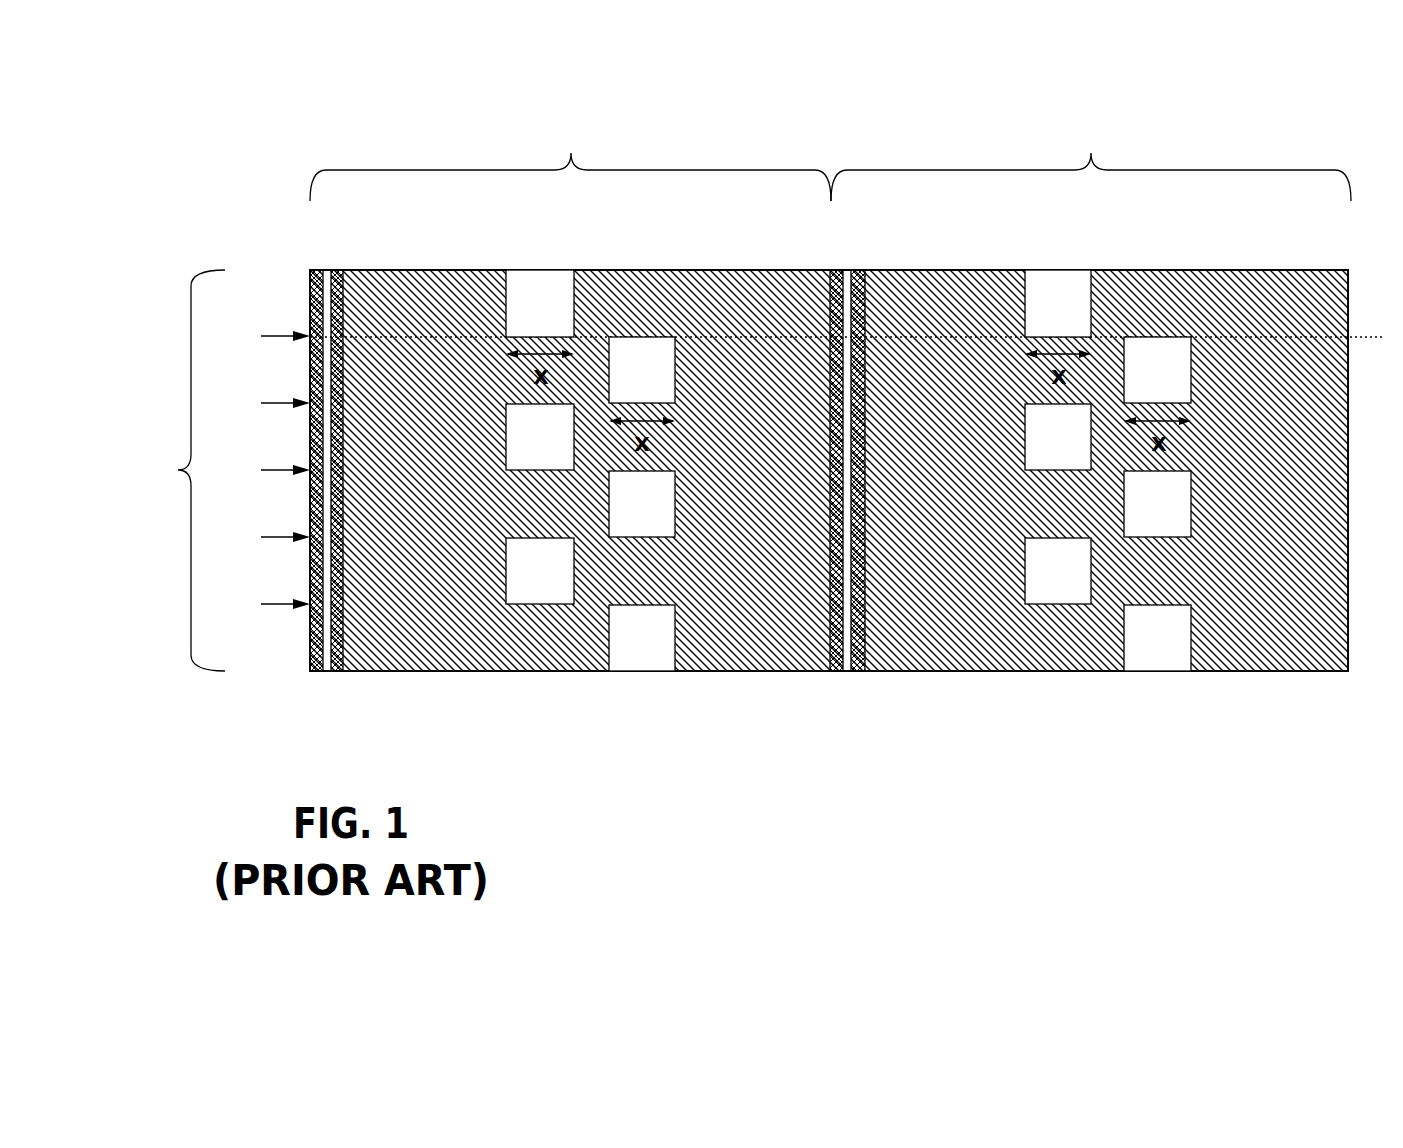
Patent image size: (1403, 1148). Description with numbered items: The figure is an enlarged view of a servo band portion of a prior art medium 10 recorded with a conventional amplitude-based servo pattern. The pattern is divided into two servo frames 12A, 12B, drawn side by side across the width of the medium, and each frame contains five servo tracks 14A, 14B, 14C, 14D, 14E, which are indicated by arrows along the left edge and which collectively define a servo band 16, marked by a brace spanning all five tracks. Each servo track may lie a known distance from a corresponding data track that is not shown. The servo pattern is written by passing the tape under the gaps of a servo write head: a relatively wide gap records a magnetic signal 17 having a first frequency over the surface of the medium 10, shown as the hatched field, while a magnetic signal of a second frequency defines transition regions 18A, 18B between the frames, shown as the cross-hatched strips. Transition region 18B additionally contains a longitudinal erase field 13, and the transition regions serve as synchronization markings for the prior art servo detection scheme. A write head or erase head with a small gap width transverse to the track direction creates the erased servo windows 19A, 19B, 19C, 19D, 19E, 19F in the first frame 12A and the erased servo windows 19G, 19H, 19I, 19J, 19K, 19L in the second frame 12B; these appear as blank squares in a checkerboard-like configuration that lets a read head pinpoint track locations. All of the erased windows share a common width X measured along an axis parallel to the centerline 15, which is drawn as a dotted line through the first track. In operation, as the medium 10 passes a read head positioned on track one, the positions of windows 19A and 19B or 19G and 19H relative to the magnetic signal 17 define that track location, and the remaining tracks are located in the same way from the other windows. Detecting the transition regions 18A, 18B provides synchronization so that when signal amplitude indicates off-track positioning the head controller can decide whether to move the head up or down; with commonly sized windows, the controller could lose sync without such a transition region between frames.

The medium 10 is at (1366, 530).
The servo frame 12A is at (570, 163).
The servo frame 12B is at (1091, 163).
The longitudinal erase field 13 is at (838, 262).
The servo track 14A is at (264, 336).
The servo track 14B is at (264, 403).
The servo track 14C is at (264, 470).
The servo track 14D is at (264, 537).
The servo track 14E is at (264, 604).
The centerline 15 is at (1358, 329).
The servo band 16 is at (181, 470).
The magnetic signal 17 is at (888, 625).
The transition region 18A is at (299, 658).
The transition region 18B is at (850, 262).
The erased servo window 19A is at (535, 291).
The erased servo window 19B is at (642, 356).
The erased servo window 19C is at (525, 430).
The erased servo window 19D is at (640, 505).
The erased servo window 19E is at (535, 555).
The erased servo window 19F is at (632, 622).
The erased servo window 19G is at (1040, 291).
The erased servo window 19H is at (1150, 366).
The erased servo window 19I is at (1040, 430).
The erased servo window 19J is at (1160, 505).
The erased servo window 19K is at (1050, 555).
The erased servo window 19L is at (1165, 622).